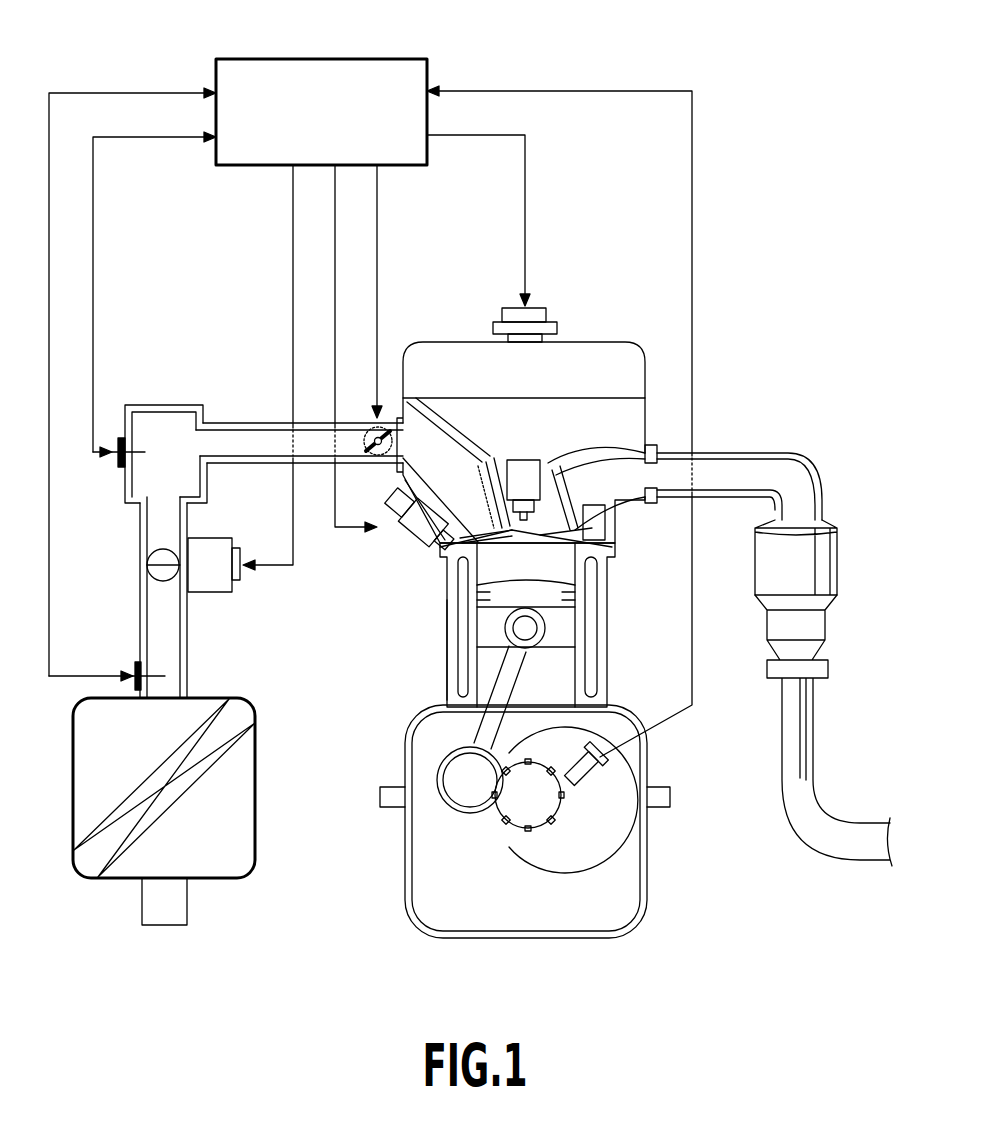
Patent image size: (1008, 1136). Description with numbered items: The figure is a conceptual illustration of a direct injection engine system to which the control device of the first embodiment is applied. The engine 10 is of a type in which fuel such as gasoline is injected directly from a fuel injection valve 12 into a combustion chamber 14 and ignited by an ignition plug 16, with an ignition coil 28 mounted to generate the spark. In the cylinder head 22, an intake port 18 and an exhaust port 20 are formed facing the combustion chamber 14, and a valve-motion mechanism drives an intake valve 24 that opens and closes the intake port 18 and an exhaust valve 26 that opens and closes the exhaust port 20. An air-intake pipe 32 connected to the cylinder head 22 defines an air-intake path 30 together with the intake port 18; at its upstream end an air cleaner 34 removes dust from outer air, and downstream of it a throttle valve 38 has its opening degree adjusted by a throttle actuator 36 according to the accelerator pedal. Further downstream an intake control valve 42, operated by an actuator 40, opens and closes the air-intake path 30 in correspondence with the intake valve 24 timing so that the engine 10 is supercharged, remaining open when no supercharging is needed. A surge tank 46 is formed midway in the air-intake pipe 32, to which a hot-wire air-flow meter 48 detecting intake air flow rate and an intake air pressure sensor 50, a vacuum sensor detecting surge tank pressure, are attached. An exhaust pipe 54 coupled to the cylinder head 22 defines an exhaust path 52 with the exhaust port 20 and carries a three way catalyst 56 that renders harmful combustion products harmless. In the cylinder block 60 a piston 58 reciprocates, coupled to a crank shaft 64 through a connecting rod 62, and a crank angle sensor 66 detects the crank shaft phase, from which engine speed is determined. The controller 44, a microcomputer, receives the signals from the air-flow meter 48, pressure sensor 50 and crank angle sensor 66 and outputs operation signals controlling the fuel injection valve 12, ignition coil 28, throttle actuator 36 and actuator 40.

The engine 10 is at (336, 689).
The fuel injection valve 12 is at (423, 540).
The combustion chamber 14 is at (590, 567).
The ignition plug 16 is at (526, 536).
The intake port 18 is at (420, 462).
The exhaust port 20 is at (590, 487).
The cylinder head 22 is at (487, 407).
The intake valve 24 is at (482, 540).
The exhaust valve 26 is at (612, 512).
The ignition coil 28 is at (557, 330).
The air-intake path 30 is at (215, 440).
The air-intake pipe 32 is at (188, 632).
The air cleaner 34 is at (85, 757).
The throttle actuator 36 is at (232, 545).
The throttle valve 38 is at (147, 560).
The actuator 40 is at (368, 436).
The intake control valve 42 is at (384, 462).
The controller 44 is at (372, 58).
The surge tank 46 is at (166, 425).
The air-flow meter 48 is at (135, 664).
The intake air pressure sensor 50 is at (114, 462).
The exhaust path 52 is at (724, 468).
The exhaust pipe 54 is at (805, 488).
The three way catalyst 56 is at (838, 562).
The piston 58 is at (576, 633).
The cylinder block 60 is at (450, 686).
The connecting rod 62 is at (502, 685).
The crank shaft 64 is at (522, 818).
The crank angle sensor 66 is at (612, 782).